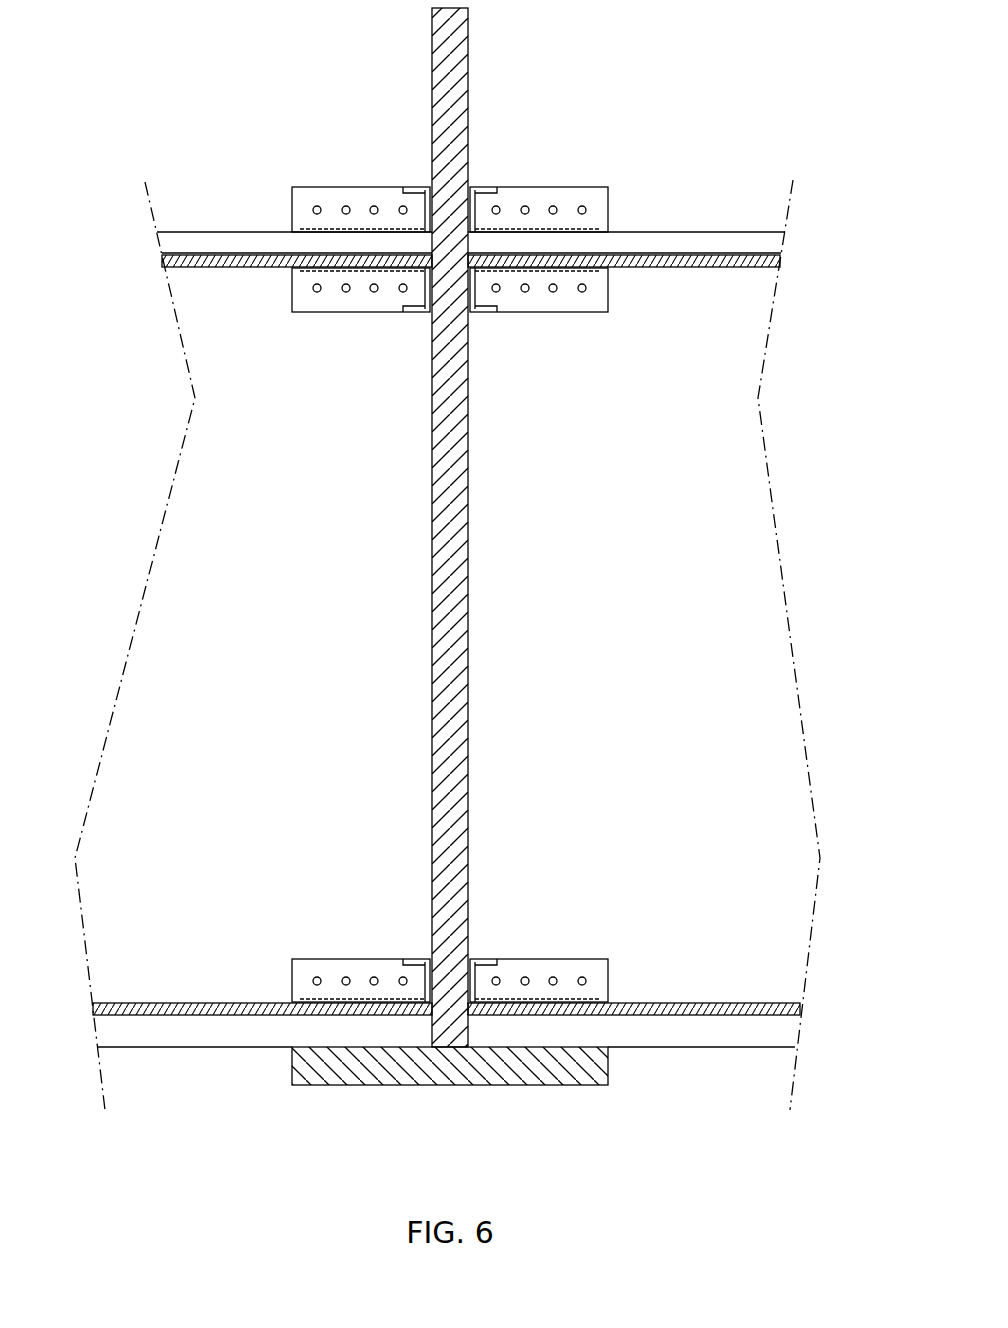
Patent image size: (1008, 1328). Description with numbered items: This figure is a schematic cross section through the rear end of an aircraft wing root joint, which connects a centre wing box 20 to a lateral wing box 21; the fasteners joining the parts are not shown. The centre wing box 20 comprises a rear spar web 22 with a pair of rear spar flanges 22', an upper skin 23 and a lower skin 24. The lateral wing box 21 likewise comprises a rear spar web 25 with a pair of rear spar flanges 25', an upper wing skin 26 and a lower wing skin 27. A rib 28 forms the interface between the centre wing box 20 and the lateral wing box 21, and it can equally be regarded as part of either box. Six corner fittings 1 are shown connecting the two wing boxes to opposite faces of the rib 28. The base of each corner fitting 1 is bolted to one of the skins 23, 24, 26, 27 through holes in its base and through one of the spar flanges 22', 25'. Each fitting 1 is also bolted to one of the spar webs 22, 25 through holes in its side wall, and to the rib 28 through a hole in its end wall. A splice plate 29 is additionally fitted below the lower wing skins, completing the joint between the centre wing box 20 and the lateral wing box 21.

The corner fitting 1 is at (362, 187).
The centre wing box 20 is at (606, 624).
The lateral wing box 21 is at (293, 624).
The rear spar web 22 is at (820, 645).
The rear spar flanges 22' is at (634, 635).
The upper skin 23 is at (663, 230).
The lower skin 24 is at (700, 1047).
The rear spar web 25 is at (120, 646).
The rear spar flanges 25' is at (262, 635).
The upper wing skin 26 is at (233, 232).
The lower wing skin 27 is at (207, 1047).
The rib 28 is at (468, 698).
The splice plate 29 is at (423, 1085).